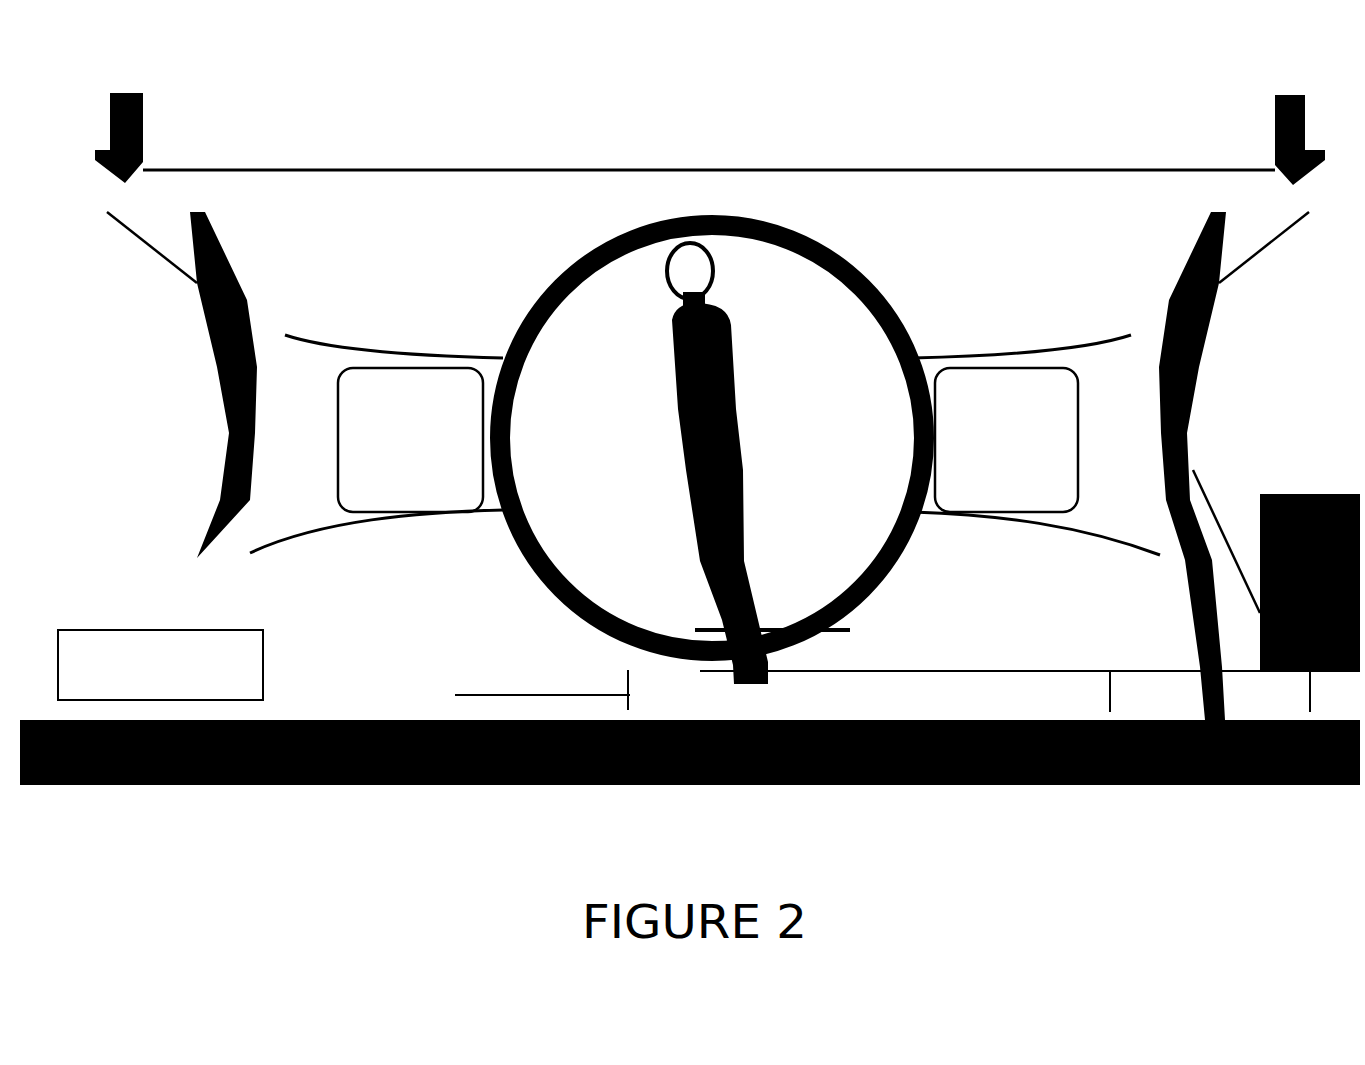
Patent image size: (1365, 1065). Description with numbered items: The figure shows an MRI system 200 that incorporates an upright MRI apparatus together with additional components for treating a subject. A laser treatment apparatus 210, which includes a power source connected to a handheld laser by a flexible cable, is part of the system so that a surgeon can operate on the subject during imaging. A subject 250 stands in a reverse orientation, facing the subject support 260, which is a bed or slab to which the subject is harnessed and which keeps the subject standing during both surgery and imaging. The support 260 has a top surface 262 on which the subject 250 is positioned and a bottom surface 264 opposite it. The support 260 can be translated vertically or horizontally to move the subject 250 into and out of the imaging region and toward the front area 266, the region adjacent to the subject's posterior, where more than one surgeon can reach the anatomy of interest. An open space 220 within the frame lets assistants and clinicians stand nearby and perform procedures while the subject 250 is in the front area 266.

The MRI system 200 is at (714, 836).
The laser treatment apparatus 210 is at (1326, 488).
The open space 220 is at (1266, 431).
The subject 250 is at (748, 363).
The subject support 260 is at (628, 323).
The top surface 262 is at (637, 203).
The bottom surface 264 is at (600, 195).
The front area 266 is at (1142, 437).